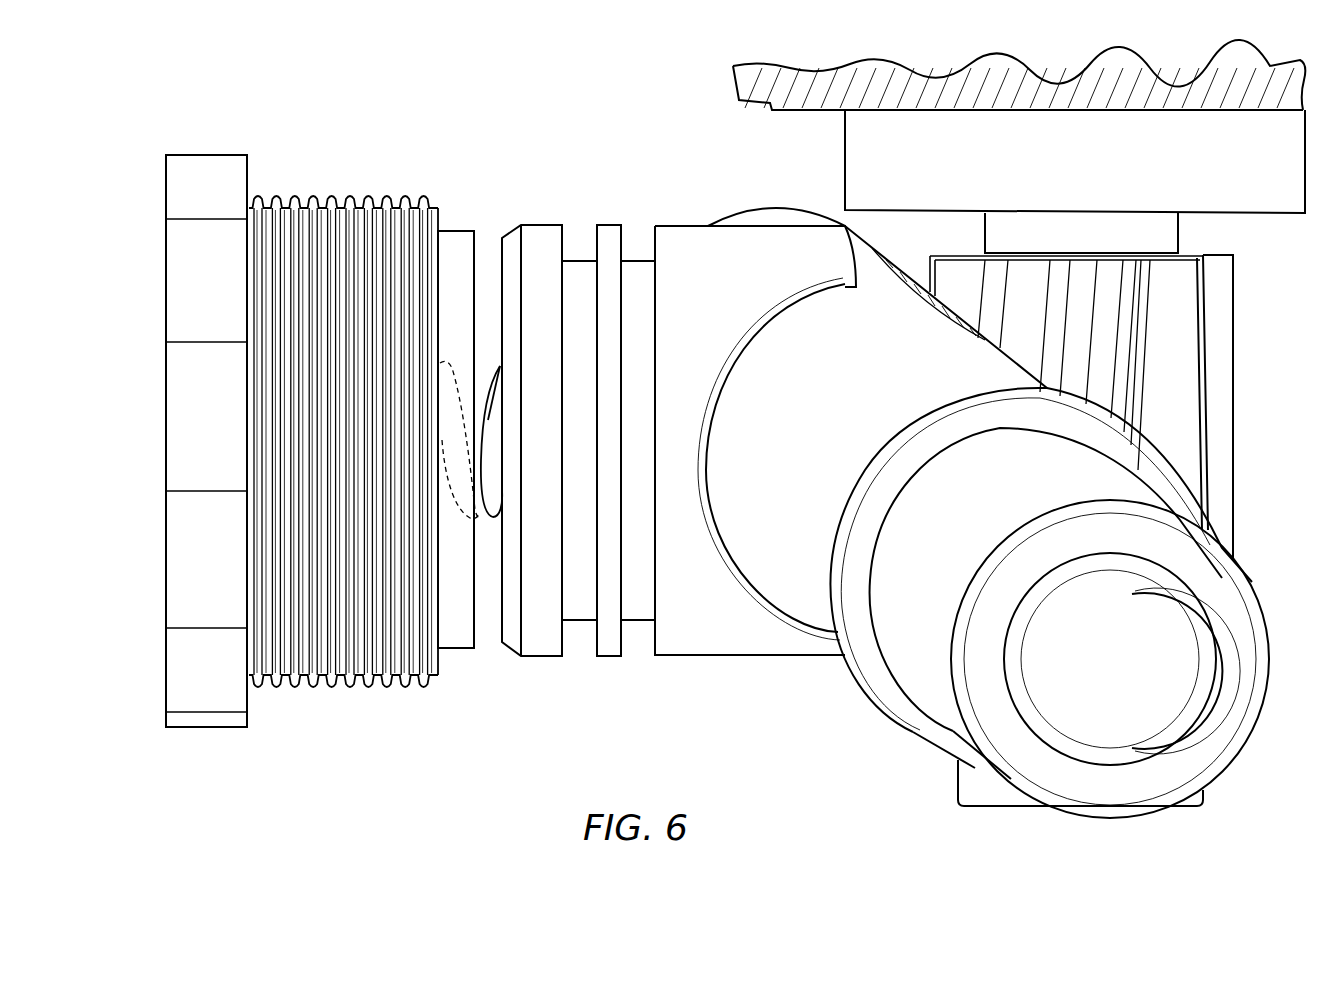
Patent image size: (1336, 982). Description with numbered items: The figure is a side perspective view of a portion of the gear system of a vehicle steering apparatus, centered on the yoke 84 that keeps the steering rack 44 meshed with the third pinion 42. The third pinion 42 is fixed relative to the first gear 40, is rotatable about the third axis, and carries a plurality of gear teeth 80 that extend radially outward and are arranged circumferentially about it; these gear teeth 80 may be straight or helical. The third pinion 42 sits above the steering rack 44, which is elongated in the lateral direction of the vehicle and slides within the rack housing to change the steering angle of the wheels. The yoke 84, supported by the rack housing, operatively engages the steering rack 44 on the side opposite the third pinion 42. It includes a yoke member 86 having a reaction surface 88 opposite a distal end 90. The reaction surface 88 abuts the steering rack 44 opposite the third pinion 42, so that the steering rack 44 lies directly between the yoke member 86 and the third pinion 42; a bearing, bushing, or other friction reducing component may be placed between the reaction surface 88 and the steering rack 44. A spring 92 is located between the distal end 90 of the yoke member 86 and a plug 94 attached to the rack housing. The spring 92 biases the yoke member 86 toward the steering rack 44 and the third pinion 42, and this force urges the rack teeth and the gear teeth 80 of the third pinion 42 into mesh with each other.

The first gear 40 is at (786, 104).
The third pinion 42 is at (1235, 315).
The steering rack 44 is at (822, 612).
The gear teeth 80 is at (1233, 415).
The yoke 84 is at (431, 82).
The yoke member 86 is at (740, 226).
The reaction surface 88 is at (764, 330).
The distal end 90 is at (500, 615).
The spring 92 is at (500, 366).
The plug 94 is at (166, 207).